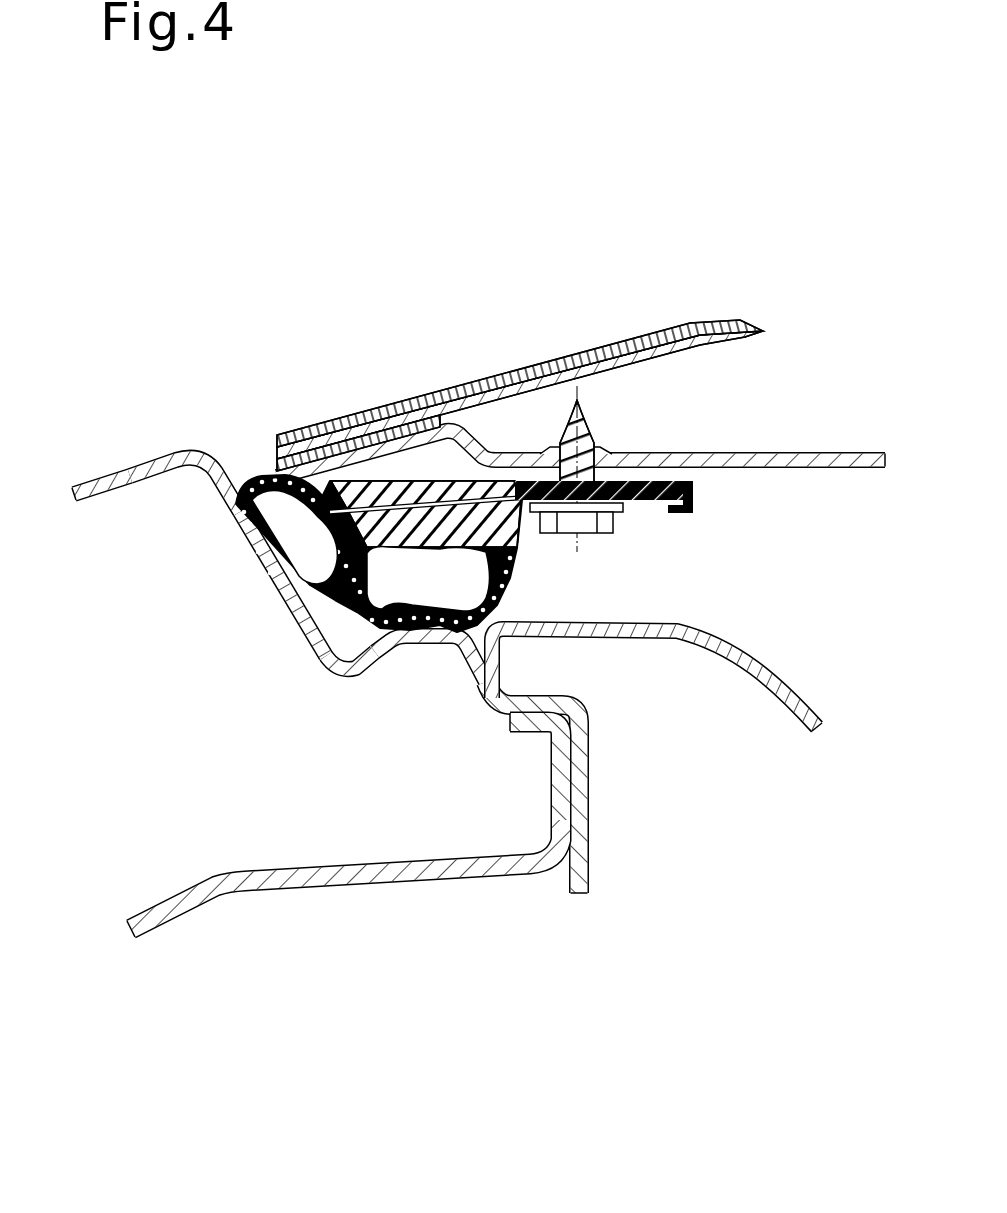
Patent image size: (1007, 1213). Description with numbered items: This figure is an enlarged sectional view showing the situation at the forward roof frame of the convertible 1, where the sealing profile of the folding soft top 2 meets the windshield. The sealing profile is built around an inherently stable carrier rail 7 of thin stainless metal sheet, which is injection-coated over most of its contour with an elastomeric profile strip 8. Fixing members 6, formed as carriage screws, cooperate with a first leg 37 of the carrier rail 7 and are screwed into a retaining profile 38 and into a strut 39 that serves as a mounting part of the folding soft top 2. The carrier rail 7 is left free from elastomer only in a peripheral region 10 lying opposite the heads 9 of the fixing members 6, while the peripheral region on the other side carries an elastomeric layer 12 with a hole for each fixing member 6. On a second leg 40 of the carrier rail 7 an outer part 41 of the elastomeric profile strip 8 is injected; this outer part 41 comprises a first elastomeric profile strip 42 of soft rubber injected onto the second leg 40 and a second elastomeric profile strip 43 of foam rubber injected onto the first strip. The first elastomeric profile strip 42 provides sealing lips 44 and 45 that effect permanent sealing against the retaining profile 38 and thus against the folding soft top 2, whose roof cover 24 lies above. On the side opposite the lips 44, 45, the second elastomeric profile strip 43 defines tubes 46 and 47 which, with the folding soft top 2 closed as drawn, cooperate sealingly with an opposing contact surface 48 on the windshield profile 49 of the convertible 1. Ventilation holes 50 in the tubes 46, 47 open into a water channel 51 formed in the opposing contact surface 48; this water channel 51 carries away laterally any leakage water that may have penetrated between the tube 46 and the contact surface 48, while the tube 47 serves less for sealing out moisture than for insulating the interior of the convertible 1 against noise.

The convertible 1 is at (270, 1035).
The folding soft top 2 is at (530, 362).
The fixing members 6 is at (582, 421).
The carrier rail 7 is at (644, 500).
The elastomeric profile strip 8 is at (513, 578).
The heads 9 is at (617, 531).
The peripheral region 10 is at (632, 502).
The elastomeric layer 12 is at (684, 470).
The roof cover 24 is at (603, 340).
The first leg 37 is at (518, 505).
The retaining profile 38 is at (690, 455).
The strut 39 is at (636, 372).
The second leg 40 is at (459, 549).
The outer part 41 is at (262, 470).
The first elastomeric profile strip 42 is at (402, 538).
The second elastomeric profile strip 43 is at (243, 482).
The sealing lip 44 is at (390, 472).
The sealing lip 45 is at (326, 468).
The tube 46 is at (300, 632).
The tube 47 is at (367, 638).
The opposing contact surface 48 is at (176, 453).
The windshield profile 49 is at (72, 478).
The ventilation holes 50 is at (318, 577).
The water channel 51 is at (333, 673).